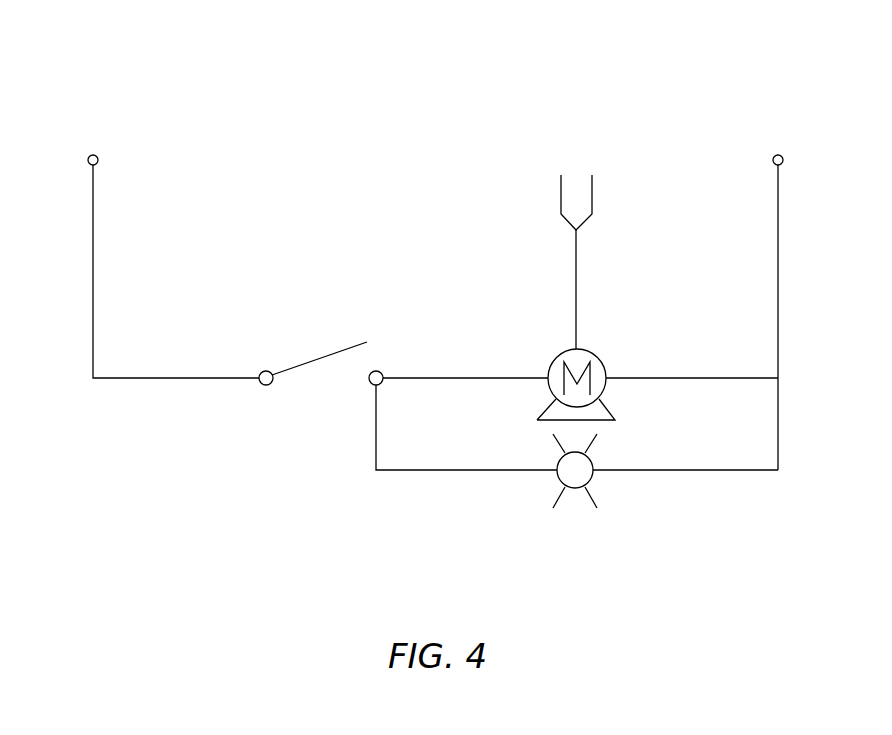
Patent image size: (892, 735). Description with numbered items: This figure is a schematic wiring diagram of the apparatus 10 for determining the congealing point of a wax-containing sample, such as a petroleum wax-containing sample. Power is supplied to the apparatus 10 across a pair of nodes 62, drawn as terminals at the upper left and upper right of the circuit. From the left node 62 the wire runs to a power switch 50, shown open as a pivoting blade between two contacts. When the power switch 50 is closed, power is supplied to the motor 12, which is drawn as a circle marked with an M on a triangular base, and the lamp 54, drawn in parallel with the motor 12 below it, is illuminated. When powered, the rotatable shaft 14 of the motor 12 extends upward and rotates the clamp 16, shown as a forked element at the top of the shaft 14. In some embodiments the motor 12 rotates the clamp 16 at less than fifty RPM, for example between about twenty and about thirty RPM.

The apparatus 10 is at (447, 52).
The motor 12 is at (597, 359).
The rotatable shaft 14 is at (577, 289).
The clamp 16 is at (580, 223).
The power switch 50 is at (313, 361).
The lamp 54 is at (589, 481).
The nodes 62 is at (96, 154).